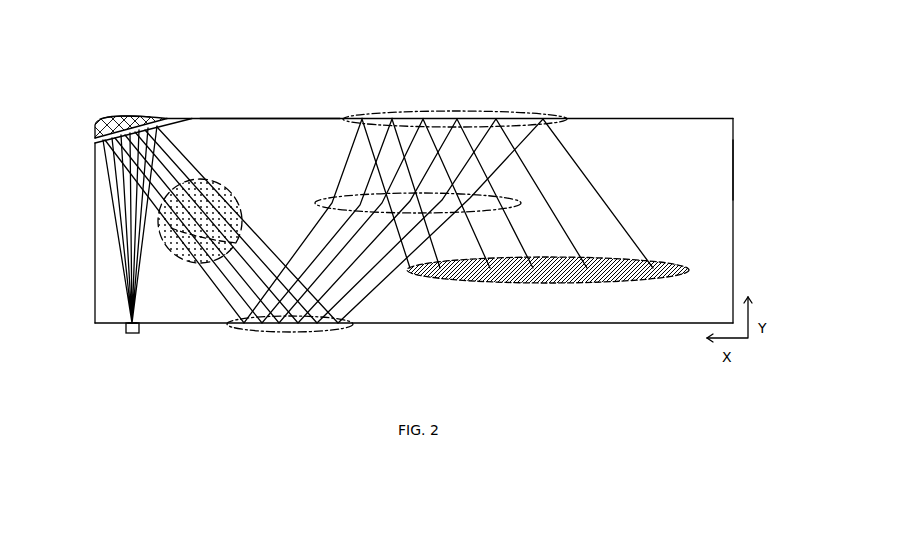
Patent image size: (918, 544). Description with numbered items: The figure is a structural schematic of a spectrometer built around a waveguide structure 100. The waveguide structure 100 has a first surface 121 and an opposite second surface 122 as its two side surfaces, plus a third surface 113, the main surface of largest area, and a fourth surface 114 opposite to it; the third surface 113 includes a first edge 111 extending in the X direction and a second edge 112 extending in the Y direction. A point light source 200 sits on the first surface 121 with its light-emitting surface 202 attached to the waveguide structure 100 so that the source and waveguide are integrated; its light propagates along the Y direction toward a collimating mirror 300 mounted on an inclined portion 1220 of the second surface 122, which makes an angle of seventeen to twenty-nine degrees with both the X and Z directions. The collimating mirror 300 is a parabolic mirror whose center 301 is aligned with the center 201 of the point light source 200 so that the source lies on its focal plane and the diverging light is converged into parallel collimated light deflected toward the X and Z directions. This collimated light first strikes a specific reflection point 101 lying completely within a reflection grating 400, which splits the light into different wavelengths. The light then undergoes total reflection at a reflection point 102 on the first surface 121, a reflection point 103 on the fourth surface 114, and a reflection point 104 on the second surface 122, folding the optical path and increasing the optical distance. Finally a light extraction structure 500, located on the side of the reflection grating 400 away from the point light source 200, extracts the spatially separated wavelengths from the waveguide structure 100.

The waveguide structure 100 is at (103, 220).
The specific reflection point 101 is at (240, 240).
The reflection point 102 is at (355, 330).
The reflection point 103 is at (323, 197).
The reflection point 104 is at (470, 106).
The first edge 111 is at (600, 118).
The second edge 112 is at (733, 160).
The third surface 113 is at (776, 221).
The fourth surface 114 is at (722, 208).
The first surface 121 is at (423, 324).
The second surface 122 is at (257, 117).
The inclined portion 1220 is at (166, 121).
The point light source 200 is at (140, 332).
The center of the point light source 201 is at (127, 326).
The light-emitting surface 202 is at (130, 320).
The collimating mirror 300 is at (112, 121).
The center of the mirror 301 is at (126, 118).
The reflection grating 400 is at (230, 187).
The light extraction structure 500 is at (687, 272).